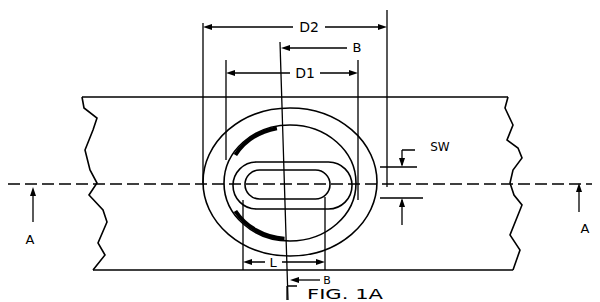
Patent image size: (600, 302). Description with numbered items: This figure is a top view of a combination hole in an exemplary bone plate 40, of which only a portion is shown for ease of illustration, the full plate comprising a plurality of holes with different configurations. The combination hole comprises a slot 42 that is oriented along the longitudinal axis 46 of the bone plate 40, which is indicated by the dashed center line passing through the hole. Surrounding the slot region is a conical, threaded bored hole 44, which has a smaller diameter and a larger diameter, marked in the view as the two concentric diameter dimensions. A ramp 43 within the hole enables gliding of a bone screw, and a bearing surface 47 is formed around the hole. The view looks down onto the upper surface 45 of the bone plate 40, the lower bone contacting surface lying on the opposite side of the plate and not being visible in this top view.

The bone plate 40 is at (478, 258).
The slot 42 is at (333, 178).
The ramp 43 is at (293, 166).
The conical, threaded bored hole 44 is at (223, 300).
The upper surface 45 is at (541, 296).
The longitudinal axis 46 is at (458, 183).
The bearing surface 47 is at (258, 153).